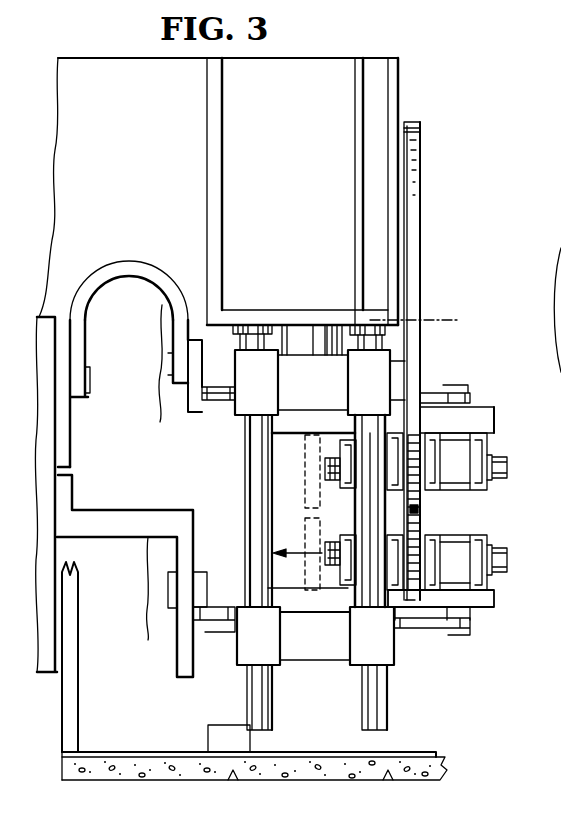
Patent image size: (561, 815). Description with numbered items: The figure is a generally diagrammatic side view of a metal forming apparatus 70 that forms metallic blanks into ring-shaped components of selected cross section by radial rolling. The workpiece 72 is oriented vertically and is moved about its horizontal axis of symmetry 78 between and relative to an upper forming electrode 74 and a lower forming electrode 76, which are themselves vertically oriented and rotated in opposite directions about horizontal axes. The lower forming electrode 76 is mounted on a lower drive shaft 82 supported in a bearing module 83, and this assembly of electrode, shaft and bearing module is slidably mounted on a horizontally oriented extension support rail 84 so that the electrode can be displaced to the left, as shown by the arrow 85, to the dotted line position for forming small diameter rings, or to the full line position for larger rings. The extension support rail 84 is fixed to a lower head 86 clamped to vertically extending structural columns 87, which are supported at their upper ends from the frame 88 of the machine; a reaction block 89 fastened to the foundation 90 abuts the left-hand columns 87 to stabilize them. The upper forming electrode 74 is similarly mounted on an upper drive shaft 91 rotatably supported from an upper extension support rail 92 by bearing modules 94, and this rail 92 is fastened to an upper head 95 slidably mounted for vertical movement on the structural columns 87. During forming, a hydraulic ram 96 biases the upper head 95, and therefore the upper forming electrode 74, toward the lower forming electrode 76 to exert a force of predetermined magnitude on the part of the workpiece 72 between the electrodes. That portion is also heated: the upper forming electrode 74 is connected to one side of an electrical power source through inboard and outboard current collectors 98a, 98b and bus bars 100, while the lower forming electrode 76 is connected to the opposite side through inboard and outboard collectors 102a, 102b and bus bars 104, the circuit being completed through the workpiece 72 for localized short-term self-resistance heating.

The apparatus 70 is at (303, 56).
The workpiece 72 is at (420, 135).
The upper forming electrode 74 is at (507, 470).
The lower forming electrode 76 is at (418, 528).
The horizontal axis of symmetry 78 is at (441, 318).
The lower drive shaft 82 is at (325, 552).
The bearing module 83 is at (480, 545).
The extension support rail 84 is at (494, 600).
The arrow 85 is at (297, 556).
The lower head 86 is at (326, 652).
The structural columns 87 is at (362, 706).
The frame 88 is at (292, 136).
The reaction block 89 is at (210, 725).
The foundation 90 is at (437, 760).
The upper drive shaft 91 is at (325, 465).
The upper extension support rail 92 is at (494, 414).
The bearing modules 94 is at (480, 463).
The upper head 95 is at (380, 375).
The hydraulic ram 96 is at (307, 335).
The inboard current collector 98a is at (400, 455).
The outboard current collector 98b is at (465, 482).
The bus bars 100 is at (205, 402).
The inboard collector 102a is at (400, 560).
The outboard collector 102b is at (460, 563).
The bus bars 104 is at (210, 630).